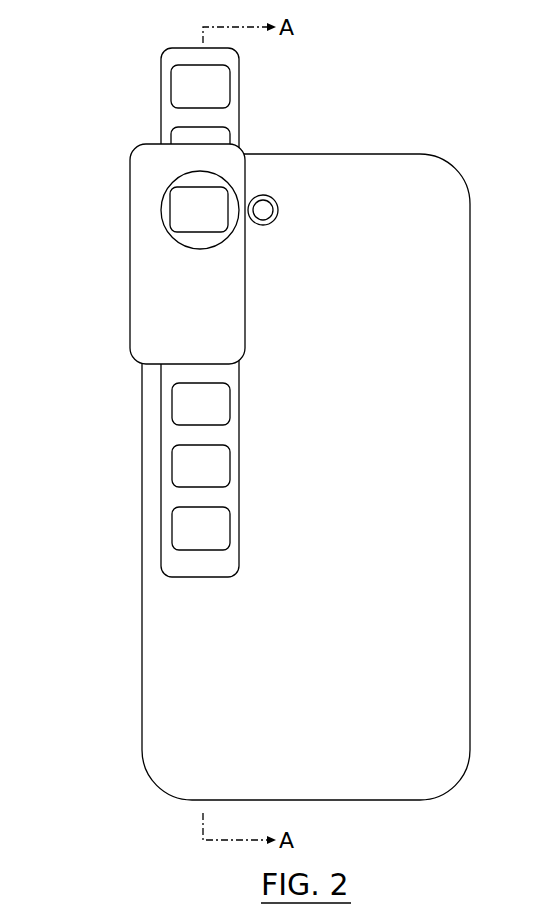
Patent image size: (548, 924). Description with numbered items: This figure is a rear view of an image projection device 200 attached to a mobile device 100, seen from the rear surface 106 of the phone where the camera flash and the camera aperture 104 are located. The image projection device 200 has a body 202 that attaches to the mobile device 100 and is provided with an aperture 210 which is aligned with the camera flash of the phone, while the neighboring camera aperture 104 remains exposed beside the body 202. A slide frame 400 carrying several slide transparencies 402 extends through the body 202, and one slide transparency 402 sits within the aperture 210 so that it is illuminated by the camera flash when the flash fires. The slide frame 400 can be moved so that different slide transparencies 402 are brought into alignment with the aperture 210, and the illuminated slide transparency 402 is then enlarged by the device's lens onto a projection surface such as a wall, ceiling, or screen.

The mobile device 100 is at (396, 150).
The camera aperture 104 is at (281, 183).
The rear surface 106 is at (334, 473).
The image projection device 200 is at (121, 171).
The body 202 is at (209, 312).
The aperture 210 is at (224, 178).
The slide frame 400 is at (239, 50).
The slide transparency 402 is at (221, 98).